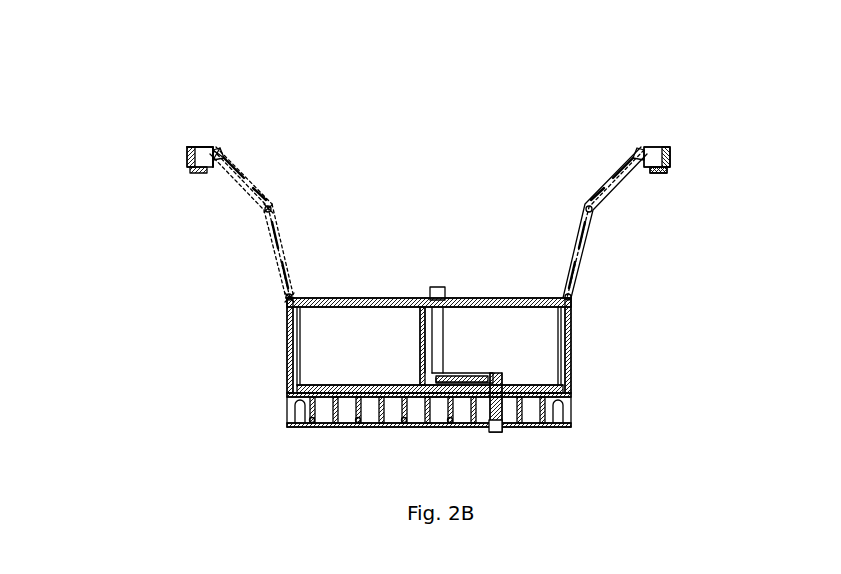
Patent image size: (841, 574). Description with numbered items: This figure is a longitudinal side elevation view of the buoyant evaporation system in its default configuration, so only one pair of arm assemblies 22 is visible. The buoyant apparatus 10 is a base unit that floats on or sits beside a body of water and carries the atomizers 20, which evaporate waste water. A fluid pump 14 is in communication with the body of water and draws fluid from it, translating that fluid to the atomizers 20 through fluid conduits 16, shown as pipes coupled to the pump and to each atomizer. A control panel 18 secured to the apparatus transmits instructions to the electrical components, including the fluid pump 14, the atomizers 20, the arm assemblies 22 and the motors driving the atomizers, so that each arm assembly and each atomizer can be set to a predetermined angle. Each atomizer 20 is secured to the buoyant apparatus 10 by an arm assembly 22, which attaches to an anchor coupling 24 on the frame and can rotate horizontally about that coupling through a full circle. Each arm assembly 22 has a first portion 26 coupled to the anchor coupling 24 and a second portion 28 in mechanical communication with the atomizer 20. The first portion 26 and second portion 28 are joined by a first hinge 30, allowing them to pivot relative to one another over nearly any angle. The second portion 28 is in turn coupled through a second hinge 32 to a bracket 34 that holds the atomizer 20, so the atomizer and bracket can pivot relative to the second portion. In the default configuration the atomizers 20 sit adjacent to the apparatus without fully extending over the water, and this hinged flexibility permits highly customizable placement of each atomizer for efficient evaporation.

The buoyant apparatus 10 is at (570, 393).
The fluid pump 14 is at (503, 432).
The fluid conduits 16 is at (352, 385).
The control panel 18 is at (432, 287).
The atomizer 20 is at (187, 162).
The arm assembly 22 is at (595, 143).
The anchor coupling 24 is at (288, 298).
The first portion 26 is at (288, 247).
The second portion 28 is at (257, 163).
The first hinge 30 is at (267, 217).
The second hinge 32 is at (237, 153).
The bracket 34 is at (220, 147).